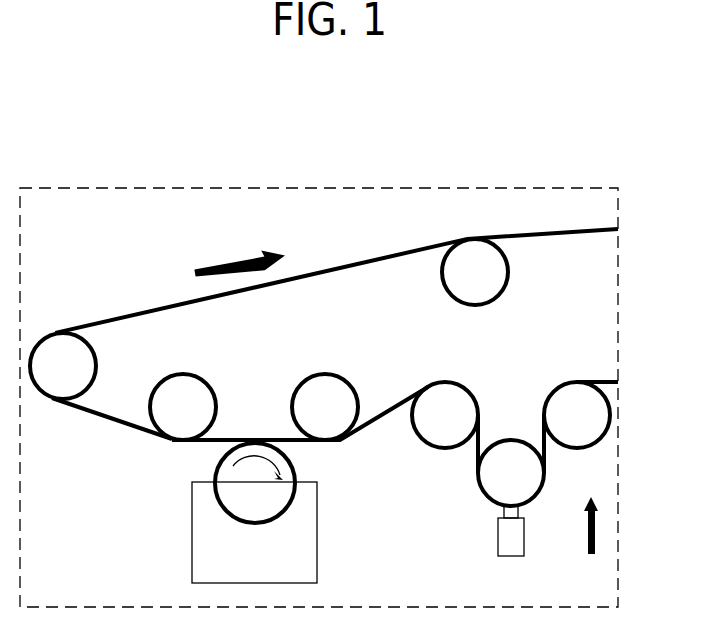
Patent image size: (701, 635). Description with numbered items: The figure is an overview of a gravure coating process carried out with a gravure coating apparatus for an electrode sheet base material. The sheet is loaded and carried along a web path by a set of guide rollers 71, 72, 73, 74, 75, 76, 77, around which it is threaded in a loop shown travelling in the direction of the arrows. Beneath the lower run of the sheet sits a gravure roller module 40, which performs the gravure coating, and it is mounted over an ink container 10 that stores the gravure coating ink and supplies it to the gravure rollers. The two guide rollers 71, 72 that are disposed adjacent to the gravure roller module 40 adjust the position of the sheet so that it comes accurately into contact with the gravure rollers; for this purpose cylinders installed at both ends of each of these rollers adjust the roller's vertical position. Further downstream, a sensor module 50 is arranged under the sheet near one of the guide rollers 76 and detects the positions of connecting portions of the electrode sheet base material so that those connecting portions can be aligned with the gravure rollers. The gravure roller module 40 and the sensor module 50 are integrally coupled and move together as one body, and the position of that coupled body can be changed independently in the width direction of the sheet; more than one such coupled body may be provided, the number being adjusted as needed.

The ink container 10 is at (317, 550).
The gravure roller module 40 is at (295, 471).
The sensor module 50 is at (524, 538).
The guide roller 71 is at (183, 374).
The guide roller 72 is at (325, 374).
The guide roller 73 is at (59, 333).
The guide roller 74 is at (508, 276).
The guide roller 75 is at (445, 382).
The guide roller 76 is at (511, 440).
The guide roller 77 is at (577, 382).